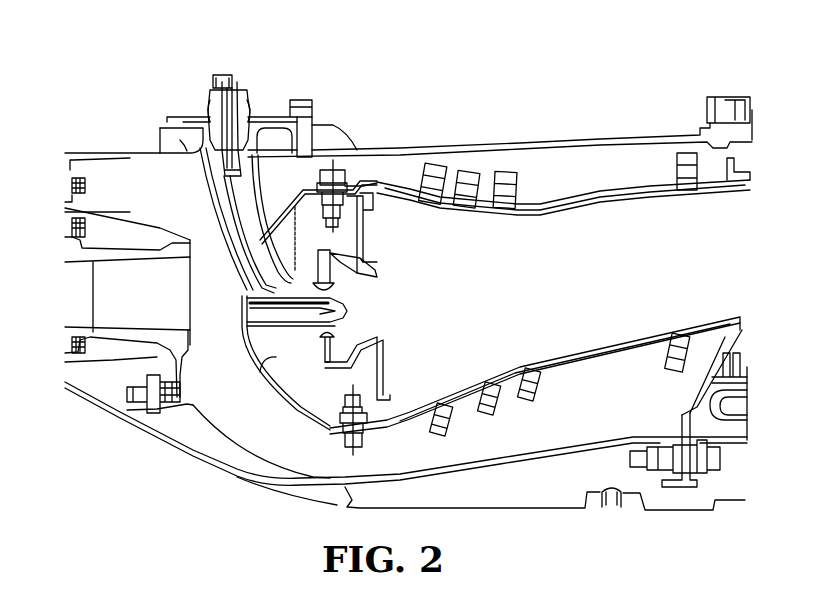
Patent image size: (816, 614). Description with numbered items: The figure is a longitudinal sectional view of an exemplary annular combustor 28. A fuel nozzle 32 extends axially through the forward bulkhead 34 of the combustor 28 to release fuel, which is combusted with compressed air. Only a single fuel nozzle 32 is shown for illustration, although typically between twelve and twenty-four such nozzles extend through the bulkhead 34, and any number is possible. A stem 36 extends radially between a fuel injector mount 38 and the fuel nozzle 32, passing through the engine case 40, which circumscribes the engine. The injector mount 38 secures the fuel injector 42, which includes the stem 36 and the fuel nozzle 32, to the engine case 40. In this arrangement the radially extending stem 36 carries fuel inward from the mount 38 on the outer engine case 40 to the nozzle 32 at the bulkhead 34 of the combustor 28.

The annular combustor 28 is at (617, 93).
The fuel nozzle 32 is at (290, 327).
The bulkhead 34 is at (398, 376).
The stem 36 is at (210, 233).
The fuel injector mount 38 is at (183, 125).
The engine case 40 is at (392, 147).
The fuel injector 42 is at (254, 98).